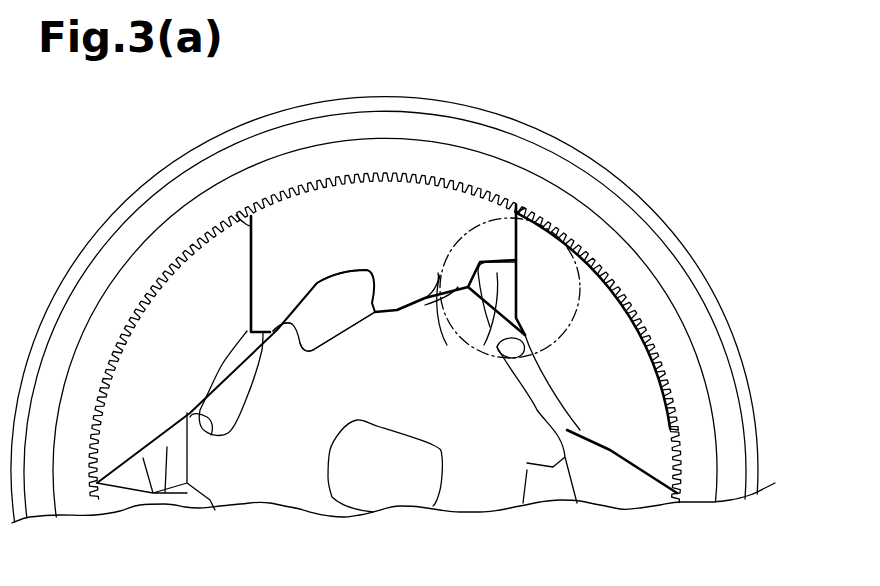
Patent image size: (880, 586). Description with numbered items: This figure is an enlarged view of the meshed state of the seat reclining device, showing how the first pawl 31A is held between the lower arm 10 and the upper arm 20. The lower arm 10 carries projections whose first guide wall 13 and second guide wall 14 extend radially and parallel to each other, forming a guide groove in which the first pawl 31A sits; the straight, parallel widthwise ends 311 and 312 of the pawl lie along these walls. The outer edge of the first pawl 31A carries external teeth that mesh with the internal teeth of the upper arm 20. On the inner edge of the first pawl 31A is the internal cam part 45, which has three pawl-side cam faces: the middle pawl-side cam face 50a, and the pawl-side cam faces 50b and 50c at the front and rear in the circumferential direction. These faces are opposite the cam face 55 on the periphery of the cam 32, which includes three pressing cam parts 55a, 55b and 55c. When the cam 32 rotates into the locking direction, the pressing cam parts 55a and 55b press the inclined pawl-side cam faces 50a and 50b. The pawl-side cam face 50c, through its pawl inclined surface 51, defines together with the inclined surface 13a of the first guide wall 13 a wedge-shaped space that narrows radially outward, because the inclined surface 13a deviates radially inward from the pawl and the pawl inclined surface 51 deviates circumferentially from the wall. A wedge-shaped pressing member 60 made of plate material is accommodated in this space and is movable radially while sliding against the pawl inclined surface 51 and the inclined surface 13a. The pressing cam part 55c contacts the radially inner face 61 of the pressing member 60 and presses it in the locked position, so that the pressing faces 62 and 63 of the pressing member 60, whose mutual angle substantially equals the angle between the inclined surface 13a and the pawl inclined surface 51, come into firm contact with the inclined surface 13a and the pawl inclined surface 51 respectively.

The lower arm 10 is at (466, 128).
The upper arm 20 is at (412, 150).
The first pawl 31A is at (477, 210).
The widthwise end 311 is at (530, 212).
The widthwise end 312 is at (236, 215).
The first guide wall 13 is at (520, 254).
The inclined surface 13a is at (540, 348).
The second guide wall 14 is at (256, 258).
The cam 32 is at (209, 434).
The internal cam part 45 is at (310, 341).
The pawl-side cam face 50a is at (377, 314).
The pawl-side cam face 50b is at (282, 340).
The pawl-side cam face 50c is at (478, 356).
The pawl inclined surface 51 is at (448, 315).
The cam face 55 is at (333, 345).
The pressing cam part 55a is at (386, 302).
The pressing cam part 55b is at (271, 330).
The pressing cam part 55c is at (468, 283).
The pressing member 60 is at (534, 266).
The inner face 61 is at (524, 354).
The pressing face 62 is at (540, 307).
The pressing face 63 is at (465, 287).